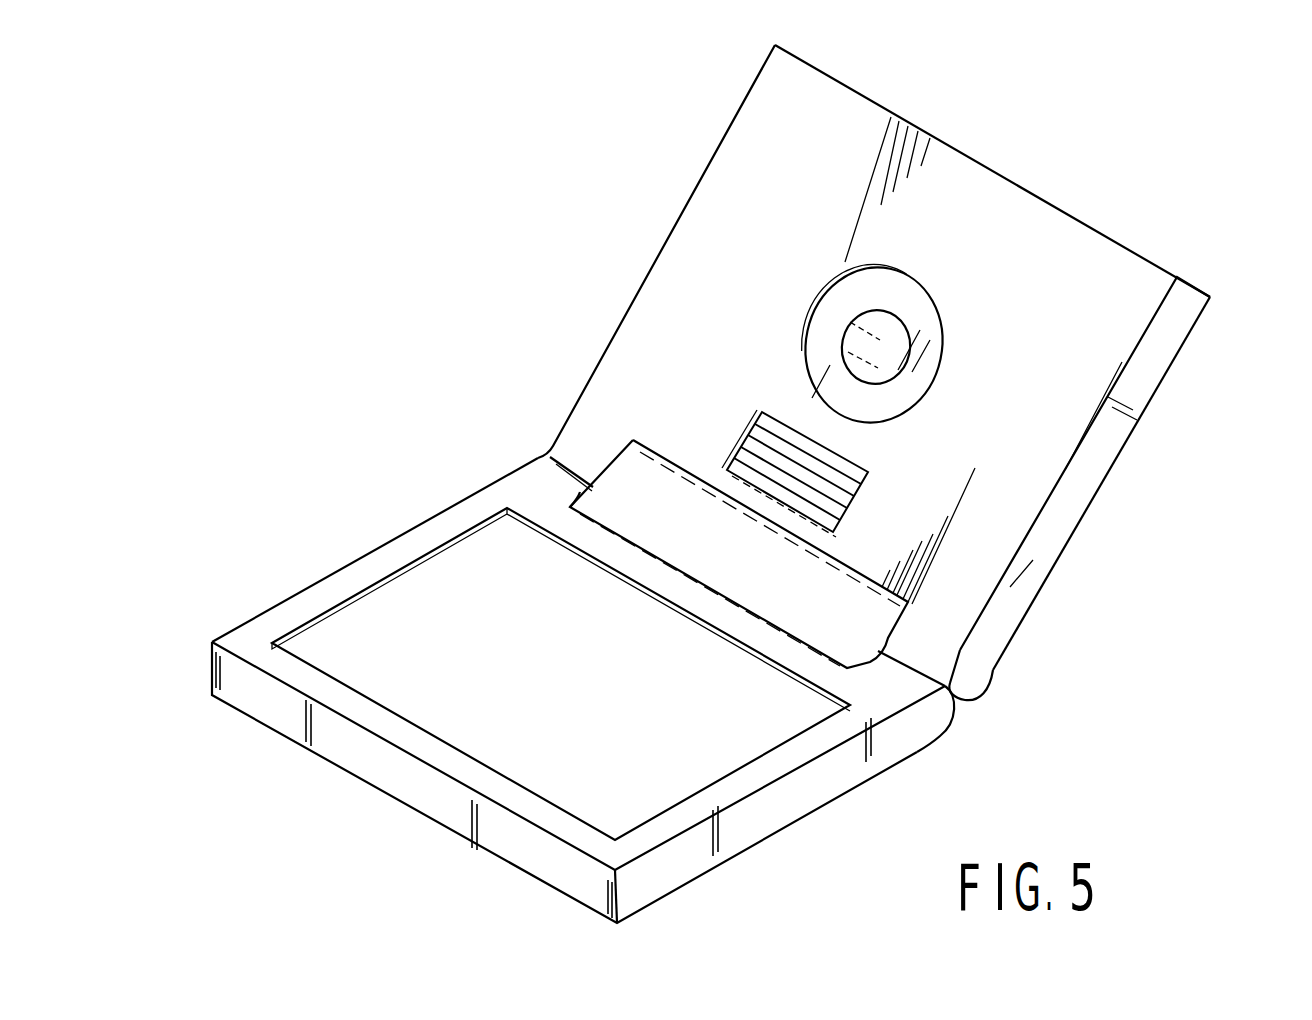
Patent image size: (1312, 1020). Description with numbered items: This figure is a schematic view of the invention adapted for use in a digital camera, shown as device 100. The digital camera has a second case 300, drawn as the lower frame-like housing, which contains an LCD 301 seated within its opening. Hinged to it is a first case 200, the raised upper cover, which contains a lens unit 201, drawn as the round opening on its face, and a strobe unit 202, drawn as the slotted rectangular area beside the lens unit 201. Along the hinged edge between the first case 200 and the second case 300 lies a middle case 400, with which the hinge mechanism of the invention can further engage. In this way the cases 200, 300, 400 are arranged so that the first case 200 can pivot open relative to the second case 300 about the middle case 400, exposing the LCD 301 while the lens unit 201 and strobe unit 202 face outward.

The electronic device 100 is at (968, 718).
The first case 200 is at (1058, 428).
The lens unit 201 is at (885, 338).
The strobe unit 202 is at (778, 452).
The second case 300 is at (352, 748).
The LCD 301 is at (450, 610).
The middle case 400 is at (860, 616).